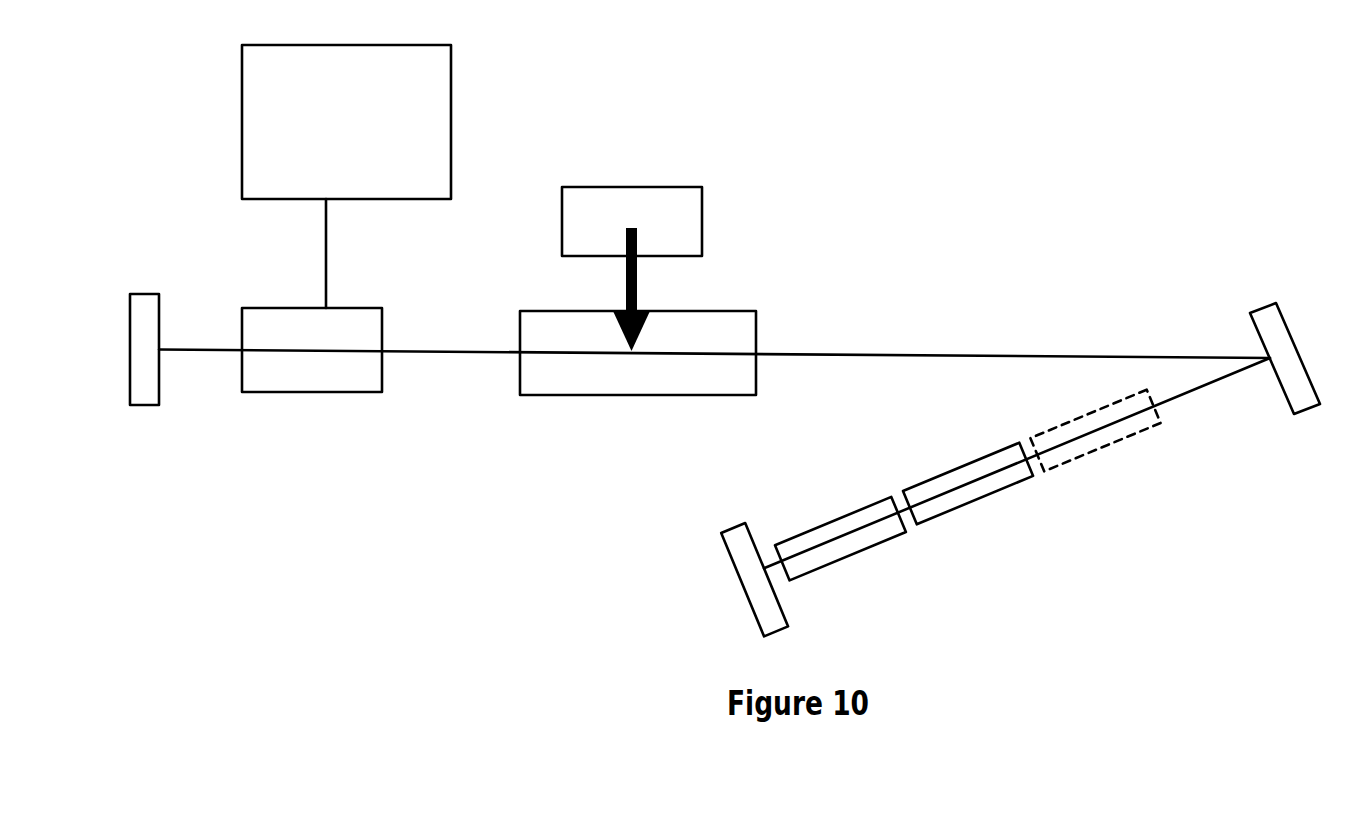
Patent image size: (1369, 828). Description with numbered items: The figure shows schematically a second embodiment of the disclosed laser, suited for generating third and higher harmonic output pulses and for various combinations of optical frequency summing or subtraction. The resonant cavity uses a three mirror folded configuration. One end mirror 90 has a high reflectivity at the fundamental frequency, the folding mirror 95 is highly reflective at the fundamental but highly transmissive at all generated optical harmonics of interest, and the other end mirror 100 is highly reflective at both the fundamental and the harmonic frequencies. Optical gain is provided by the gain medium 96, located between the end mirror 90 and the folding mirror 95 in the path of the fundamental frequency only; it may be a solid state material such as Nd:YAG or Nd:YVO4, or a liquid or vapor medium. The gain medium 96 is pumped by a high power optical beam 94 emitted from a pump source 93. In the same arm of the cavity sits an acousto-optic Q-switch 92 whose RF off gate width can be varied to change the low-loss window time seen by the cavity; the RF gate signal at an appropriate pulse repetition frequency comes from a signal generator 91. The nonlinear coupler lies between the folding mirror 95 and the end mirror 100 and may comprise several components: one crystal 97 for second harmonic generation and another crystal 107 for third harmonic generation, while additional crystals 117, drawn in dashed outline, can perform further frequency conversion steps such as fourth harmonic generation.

The end mirror 90 is at (133, 372).
The signal generator 91 is at (346, 176).
The acousto-optic Q-switch 92 is at (308, 392).
The pump source 93 is at (632, 185).
The optical beam 94 is at (636, 290).
The folding mirror 95 is at (1296, 347).
The gain medium 96 is at (596, 395).
The crystal 97 is at (827, 522).
The end mirror 100 is at (740, 583).
The crystal 107 is at (945, 470).
The additional crystals 117 is at (1095, 410).